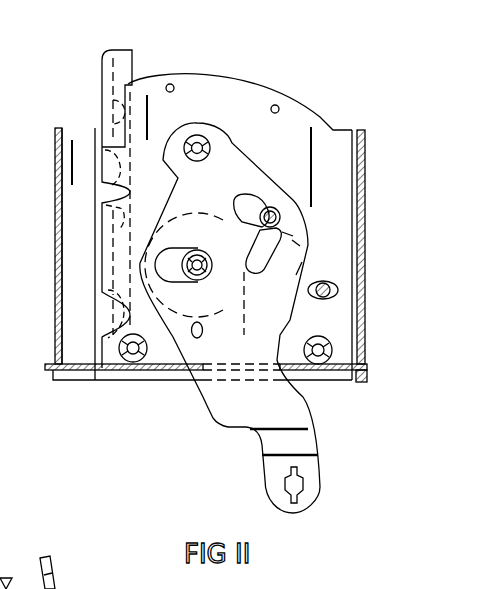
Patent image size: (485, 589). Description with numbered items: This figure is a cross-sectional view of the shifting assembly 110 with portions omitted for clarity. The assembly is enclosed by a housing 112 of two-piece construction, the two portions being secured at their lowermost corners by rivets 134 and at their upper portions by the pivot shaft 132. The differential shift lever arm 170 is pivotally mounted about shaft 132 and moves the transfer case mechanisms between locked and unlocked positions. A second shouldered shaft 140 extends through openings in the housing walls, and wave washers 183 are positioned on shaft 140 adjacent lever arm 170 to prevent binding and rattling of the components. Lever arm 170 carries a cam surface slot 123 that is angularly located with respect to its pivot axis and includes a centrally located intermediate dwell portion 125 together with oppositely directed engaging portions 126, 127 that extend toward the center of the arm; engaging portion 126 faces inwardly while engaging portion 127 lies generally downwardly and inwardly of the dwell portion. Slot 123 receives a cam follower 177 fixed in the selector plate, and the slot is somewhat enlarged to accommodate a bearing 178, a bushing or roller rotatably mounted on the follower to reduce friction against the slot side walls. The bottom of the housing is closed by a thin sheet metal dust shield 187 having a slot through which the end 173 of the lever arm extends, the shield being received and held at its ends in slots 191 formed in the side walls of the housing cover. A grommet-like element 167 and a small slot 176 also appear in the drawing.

The shifting assembly 110 is at (293, 83).
The housing 112 is at (368, 246).
The cam surface slot 123 is at (297, 243).
The intermediate dwell portion 125 is at (292, 233).
The engaging portion 126 is at (240, 206).
The engaging portion 127 is at (268, 262).
The pivot shaft 132 is at (200, 140).
The rivets 134 is at (135, 362).
The shaft 140 is at (210, 283).
The grommet 167 is at (338, 290).
The differential shift lever arm 170 is at (270, 415).
The end of lever arm 173 is at (262, 455).
The slot 176 is at (199, 339).
The cam follower 177 is at (277, 203).
The bearing 178 is at (268, 205).
The wave washers 183 is at (295, 279).
The dust shield 187 is at (88, 380).
The slots 191 is at (364, 369).